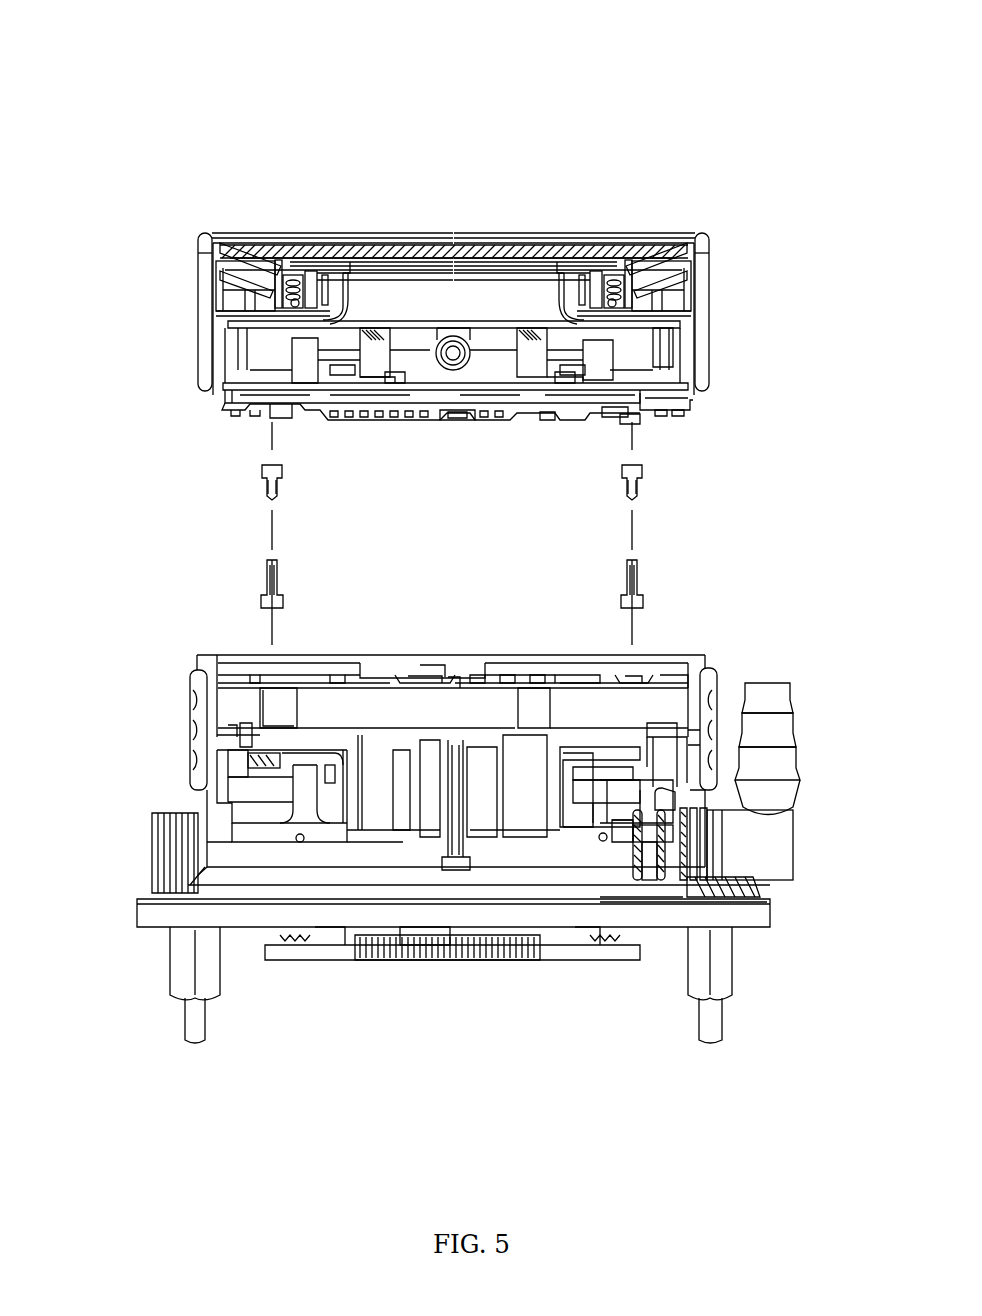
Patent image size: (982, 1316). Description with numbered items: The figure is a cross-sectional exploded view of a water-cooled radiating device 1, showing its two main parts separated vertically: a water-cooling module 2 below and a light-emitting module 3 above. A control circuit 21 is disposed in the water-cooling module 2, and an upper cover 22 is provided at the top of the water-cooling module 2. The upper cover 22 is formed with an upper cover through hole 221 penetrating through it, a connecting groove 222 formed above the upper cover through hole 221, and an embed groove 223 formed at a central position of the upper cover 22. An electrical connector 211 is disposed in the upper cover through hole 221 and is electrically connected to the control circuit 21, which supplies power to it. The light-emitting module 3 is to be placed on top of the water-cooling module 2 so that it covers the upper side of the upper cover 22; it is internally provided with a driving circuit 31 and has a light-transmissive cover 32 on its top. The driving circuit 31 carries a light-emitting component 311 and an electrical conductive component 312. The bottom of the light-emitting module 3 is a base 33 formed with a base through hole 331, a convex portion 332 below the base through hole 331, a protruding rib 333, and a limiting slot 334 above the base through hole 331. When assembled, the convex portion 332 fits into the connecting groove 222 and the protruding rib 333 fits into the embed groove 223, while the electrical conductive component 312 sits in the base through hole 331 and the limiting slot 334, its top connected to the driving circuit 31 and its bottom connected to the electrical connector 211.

The water-cooled radiating device 1 is at (152, 146).
The water-cooling module 2 is at (707, 722).
The control circuit 21 is at (622, 733).
The upper cover 22 is at (708, 720).
The electrical connector 211 is at (638, 572).
The upper cover through hole 221 is at (640, 683).
The connecting groove 222 is at (673, 683).
The embed groove 223 is at (415, 657).
The light-emitting module 3 is at (700, 280).
The driving circuit 31 is at (630, 387).
The light-emitting component 311 is at (562, 380).
The electrical conductive component 312 is at (643, 473).
The light-transmissive cover 32 is at (556, 272).
The base 33 is at (678, 407).
The base through hole 331 is at (643, 414).
The convex portion 332 is at (645, 415).
The protruding rib 333 is at (453, 420).
The limiting slot 334 is at (640, 400).